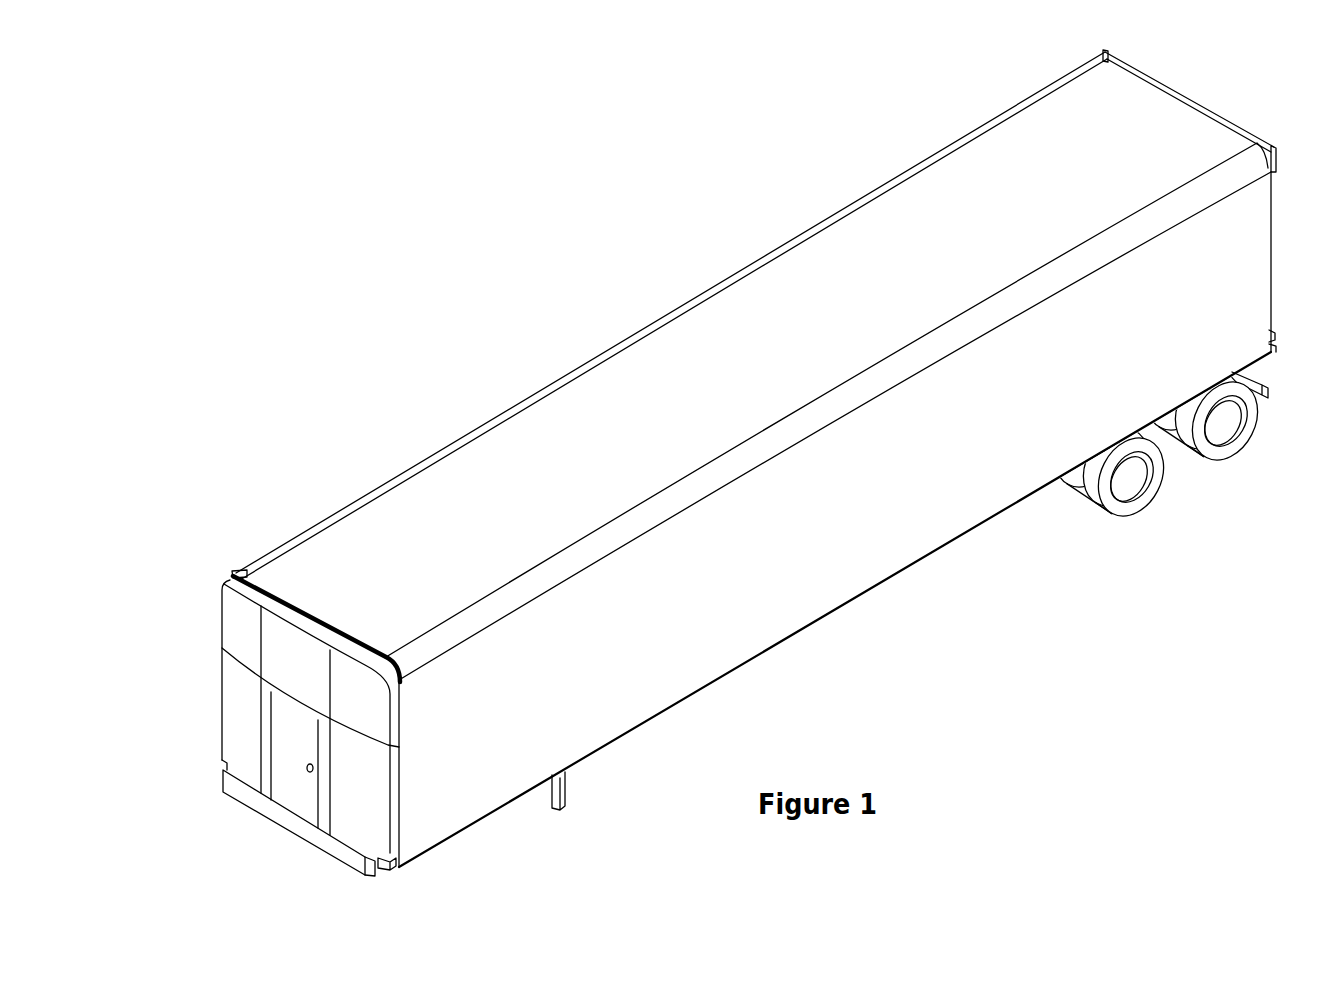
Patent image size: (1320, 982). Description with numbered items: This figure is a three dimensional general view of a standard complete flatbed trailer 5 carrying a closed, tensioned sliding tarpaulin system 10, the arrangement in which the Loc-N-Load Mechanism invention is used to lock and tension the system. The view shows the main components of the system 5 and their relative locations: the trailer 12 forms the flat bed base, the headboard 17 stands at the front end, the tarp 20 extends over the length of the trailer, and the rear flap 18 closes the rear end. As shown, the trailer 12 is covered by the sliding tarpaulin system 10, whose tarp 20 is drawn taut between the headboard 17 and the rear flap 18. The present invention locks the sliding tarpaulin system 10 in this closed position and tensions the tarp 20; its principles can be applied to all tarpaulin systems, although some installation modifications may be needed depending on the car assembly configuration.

The flatbed trailer 5 is at (932, 688).
The sliding tarpaulin system 10 is at (634, 306).
The trailer 12 is at (342, 859).
The headboard 17 is at (233, 713).
The rear flap 18 is at (1175, 101).
The tarp 20 is at (349, 553).